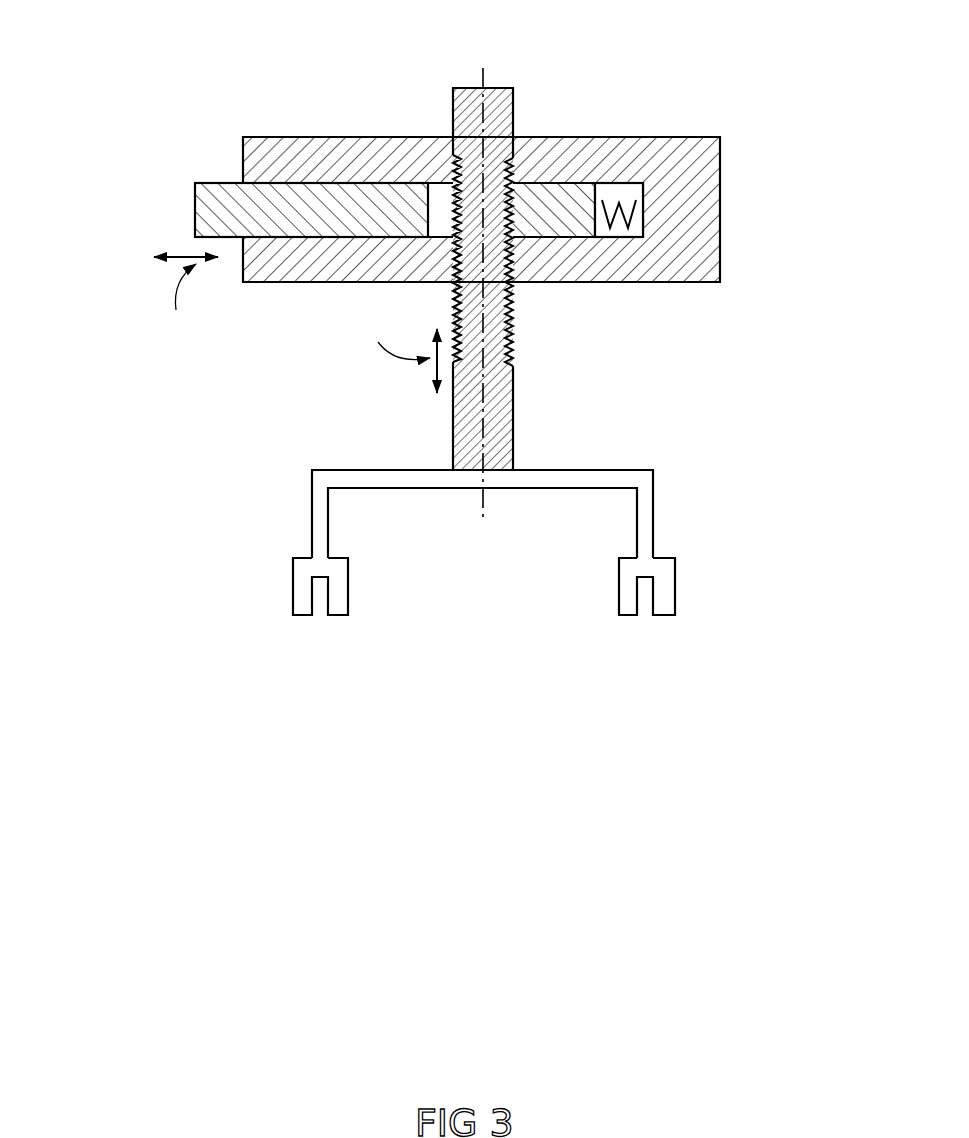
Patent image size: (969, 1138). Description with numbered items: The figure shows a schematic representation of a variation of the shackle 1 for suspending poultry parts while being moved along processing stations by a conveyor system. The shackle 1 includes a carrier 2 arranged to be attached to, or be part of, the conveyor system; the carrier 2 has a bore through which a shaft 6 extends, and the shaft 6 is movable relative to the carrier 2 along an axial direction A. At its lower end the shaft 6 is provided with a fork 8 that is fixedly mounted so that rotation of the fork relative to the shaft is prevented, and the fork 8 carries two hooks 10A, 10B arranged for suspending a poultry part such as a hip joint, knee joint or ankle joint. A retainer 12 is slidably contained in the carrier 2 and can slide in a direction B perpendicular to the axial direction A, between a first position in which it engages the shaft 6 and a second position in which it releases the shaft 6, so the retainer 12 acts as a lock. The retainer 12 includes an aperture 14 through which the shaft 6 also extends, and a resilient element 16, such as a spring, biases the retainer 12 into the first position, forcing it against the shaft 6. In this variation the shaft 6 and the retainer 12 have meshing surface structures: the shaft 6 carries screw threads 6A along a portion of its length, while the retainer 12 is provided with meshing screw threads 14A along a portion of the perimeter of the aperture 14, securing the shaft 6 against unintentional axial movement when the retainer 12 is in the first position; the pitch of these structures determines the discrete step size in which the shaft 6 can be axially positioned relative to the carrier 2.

The shackle 1 is at (674, 77).
The carrier 2 is at (277, 134).
The shaft 6 is at (517, 430).
The screw threads 6A is at (516, 309).
The fork 8 is at (391, 466).
The hook 10A is at (338, 619).
The hook 10B is at (677, 619).
The retainer 12 is at (192, 200).
The aperture 14 is at (446, 196).
The meshing screw threads 14A is at (519, 197).
The resilient element 16 is at (639, 195).